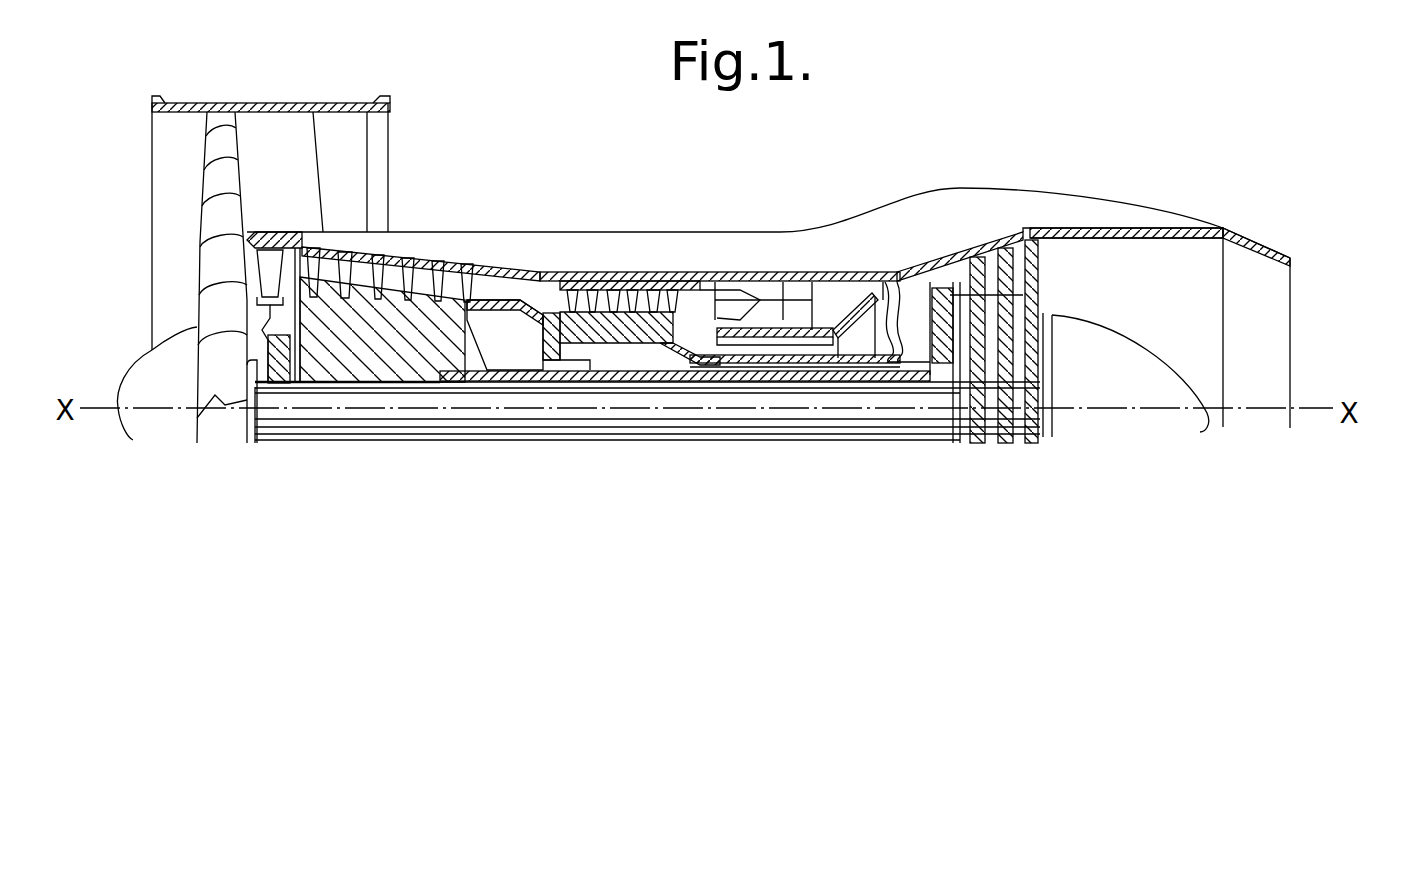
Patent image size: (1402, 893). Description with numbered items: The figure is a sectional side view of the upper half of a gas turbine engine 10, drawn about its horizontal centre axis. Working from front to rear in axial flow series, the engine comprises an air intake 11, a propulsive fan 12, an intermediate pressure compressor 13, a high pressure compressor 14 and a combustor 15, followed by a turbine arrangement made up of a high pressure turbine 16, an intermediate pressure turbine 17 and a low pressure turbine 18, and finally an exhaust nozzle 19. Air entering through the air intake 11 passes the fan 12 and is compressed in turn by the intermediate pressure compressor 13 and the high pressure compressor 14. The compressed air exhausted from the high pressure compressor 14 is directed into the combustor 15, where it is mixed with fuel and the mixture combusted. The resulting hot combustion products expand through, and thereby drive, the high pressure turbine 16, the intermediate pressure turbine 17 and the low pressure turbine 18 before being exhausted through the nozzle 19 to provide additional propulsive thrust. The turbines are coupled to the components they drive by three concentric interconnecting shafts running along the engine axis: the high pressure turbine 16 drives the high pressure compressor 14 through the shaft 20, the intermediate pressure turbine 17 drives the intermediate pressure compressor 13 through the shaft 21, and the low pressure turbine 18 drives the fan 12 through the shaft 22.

The gas turbine engine 10 is at (560, 185).
The air intake 11 is at (125, 242).
The propulsive fan 12 is at (237, 145).
The intermediate pressure compressor 13 is at (400, 277).
The high pressure compressor 14 is at (620, 290).
The combustor 15 is at (792, 265).
The high pressure turbine 16 is at (890, 270).
The intermediate pressure turbine 17 is at (947, 262).
The low pressure turbine 18 is at (1040, 268).
The exhaust nozzle 19 is at (1267, 360).
The interconnecting shaft 20 is at (810, 367).
The interconnecting shaft 21 is at (727, 378).
The interconnecting shaft 22 is at (763, 427).